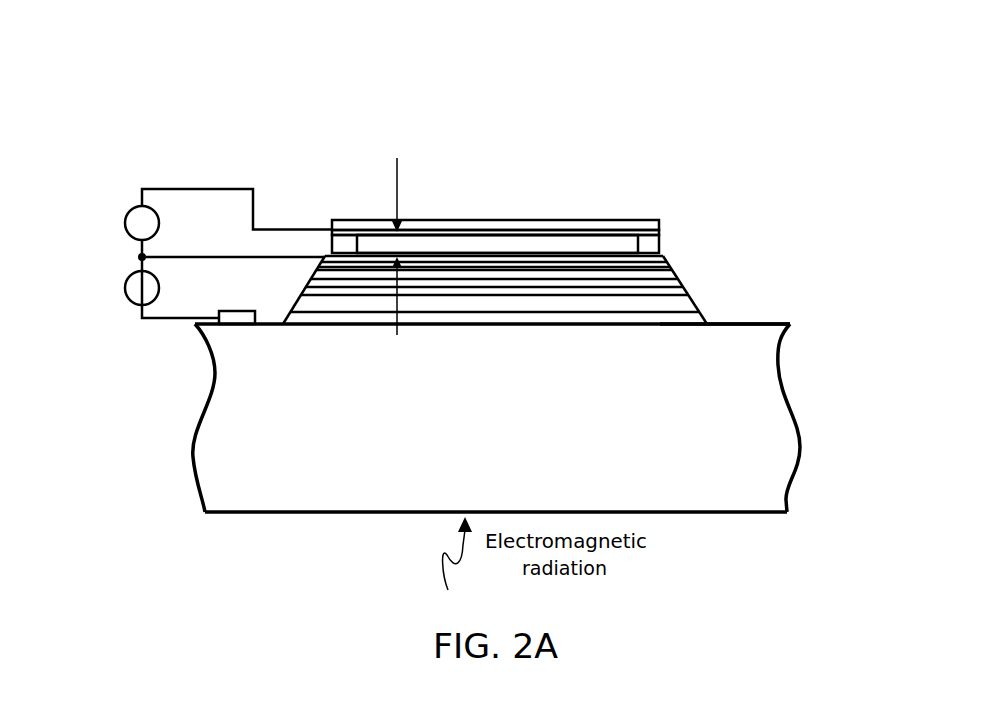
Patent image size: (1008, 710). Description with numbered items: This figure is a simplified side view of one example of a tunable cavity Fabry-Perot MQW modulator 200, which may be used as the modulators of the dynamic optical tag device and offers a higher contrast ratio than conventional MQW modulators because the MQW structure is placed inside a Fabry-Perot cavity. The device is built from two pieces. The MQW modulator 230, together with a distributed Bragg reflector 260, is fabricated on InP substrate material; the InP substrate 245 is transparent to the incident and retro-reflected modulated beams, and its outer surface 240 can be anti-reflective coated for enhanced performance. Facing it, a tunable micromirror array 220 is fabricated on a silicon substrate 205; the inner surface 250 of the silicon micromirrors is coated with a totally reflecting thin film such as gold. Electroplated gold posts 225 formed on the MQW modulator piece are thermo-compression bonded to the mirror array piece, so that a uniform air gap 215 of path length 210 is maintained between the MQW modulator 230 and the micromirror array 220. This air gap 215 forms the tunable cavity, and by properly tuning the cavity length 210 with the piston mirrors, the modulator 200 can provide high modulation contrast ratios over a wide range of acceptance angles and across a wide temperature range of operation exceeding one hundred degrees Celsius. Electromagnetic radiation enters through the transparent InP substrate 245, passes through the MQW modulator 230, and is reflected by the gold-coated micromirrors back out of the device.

The tunable cavity Fabry-Perot MQW modulator 200 is at (135, 83).
The silicon substrate 205 is at (332, 220).
The cavity length 210 is at (395, 233).
The air gap 215 is at (510, 248).
The tunable micromirror array 220 is at (660, 230).
The electroplated gold posts 225 is at (660, 243).
The MQW modulator 230 is at (510, 288).
The outer surface 240 is at (318, 513).
The InP substrate 245 is at (213, 375).
The inner surface 250 is at (450, 244).
The distributed Bragg reflector 260 is at (692, 322).